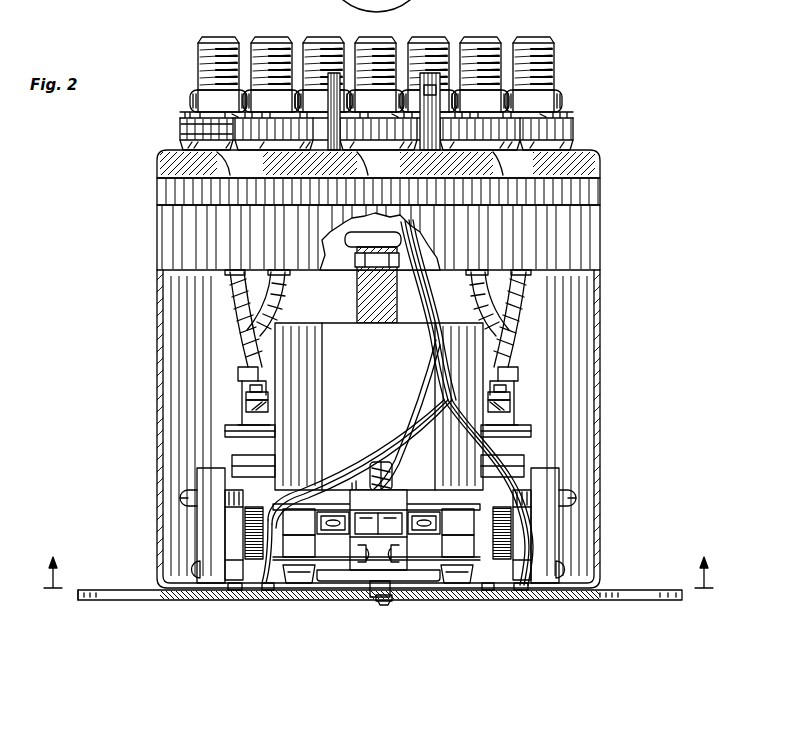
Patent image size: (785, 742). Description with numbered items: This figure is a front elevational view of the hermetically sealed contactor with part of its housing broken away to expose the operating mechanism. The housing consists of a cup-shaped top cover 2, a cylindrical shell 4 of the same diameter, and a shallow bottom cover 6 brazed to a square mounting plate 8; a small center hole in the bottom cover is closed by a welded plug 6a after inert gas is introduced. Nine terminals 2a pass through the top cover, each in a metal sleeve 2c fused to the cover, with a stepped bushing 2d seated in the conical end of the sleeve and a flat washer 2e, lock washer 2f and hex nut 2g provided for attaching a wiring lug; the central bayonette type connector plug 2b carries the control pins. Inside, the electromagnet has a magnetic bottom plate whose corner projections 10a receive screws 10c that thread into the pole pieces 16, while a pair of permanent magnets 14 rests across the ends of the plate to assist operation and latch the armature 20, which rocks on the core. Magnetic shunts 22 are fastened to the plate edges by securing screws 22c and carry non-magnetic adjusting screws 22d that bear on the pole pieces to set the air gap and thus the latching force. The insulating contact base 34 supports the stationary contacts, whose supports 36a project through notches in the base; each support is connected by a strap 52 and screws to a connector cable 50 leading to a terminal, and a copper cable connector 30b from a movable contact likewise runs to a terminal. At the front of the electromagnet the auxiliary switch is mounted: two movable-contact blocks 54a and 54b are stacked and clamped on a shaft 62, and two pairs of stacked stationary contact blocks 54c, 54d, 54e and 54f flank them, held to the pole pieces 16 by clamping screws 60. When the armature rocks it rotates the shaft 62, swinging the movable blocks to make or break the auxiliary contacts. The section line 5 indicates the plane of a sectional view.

The top cover 2 is at (157, 230).
The terminals 2a is at (268, 37).
The bayonette type connector plug 2b is at (398, 57).
The metal sleeve 2c is at (180, 152).
The stepped bushing 2d is at (180, 132).
The flat washer 2e is at (573, 127).
The lock washer 2f is at (573, 117).
The hex nut 2g is at (567, 104).
The shell 4 is at (157, 330).
The section line 5- 5 is at (378, 593).
The bottom cover 6 is at (158, 564).
The plug 6a is at (387, 601).
The mounting plate 8 is at (105, 594).
The forward and rearward projections 10a is at (268, 587).
The screws 10c is at (236, 592).
The permanent magnets 14 is at (236, 522).
The pole pieces 16 is at (305, 498).
The armature 20 is at (234, 462).
The magnetic shunts 22 is at (200, 545).
The securing screws 22c is at (194, 576).
The adjusting screws 22d is at (180, 498).
The copper cable connector 30b is at (357, 285).
The insulating contact base 34 is at (345, 330).
The stationary contact supports 36a is at (228, 438).
The connector cable 50 is at (248, 342).
The strap 52 is at (240, 398).
The movable-contact block 54a is at (372, 517).
The movable-contact block 54b is at (375, 590).
The stationary contact block 54c is at (288, 530).
The stationary contact block 54d is at (288, 553).
The stationary contact block 54e is at (447, 530).
The stationary contact block 54f is at (447, 553).
The clamping screws 60 is at (300, 590).
The shaft 62 is at (390, 475).